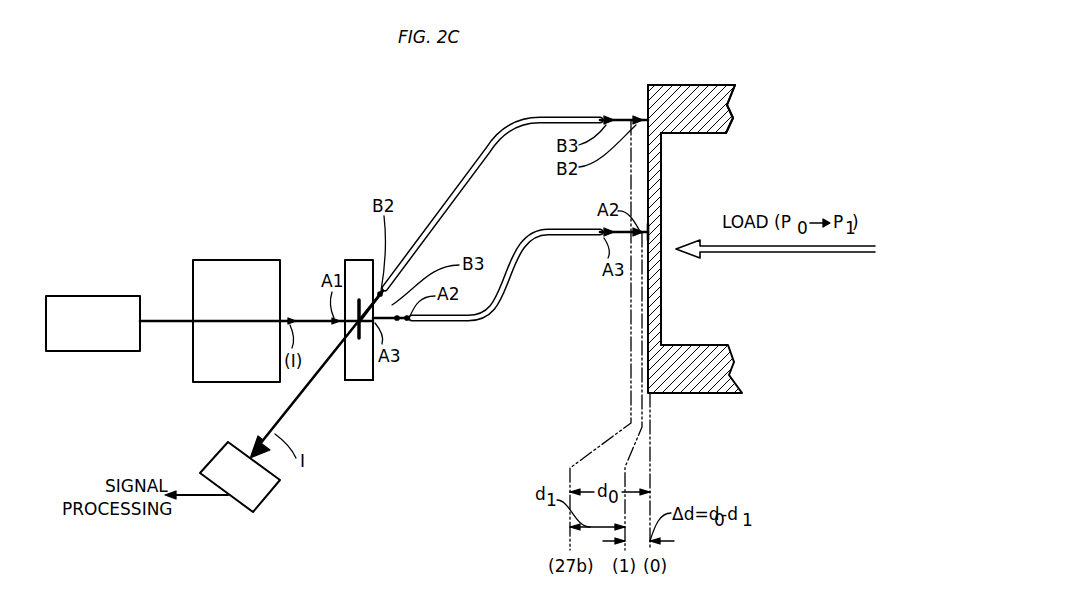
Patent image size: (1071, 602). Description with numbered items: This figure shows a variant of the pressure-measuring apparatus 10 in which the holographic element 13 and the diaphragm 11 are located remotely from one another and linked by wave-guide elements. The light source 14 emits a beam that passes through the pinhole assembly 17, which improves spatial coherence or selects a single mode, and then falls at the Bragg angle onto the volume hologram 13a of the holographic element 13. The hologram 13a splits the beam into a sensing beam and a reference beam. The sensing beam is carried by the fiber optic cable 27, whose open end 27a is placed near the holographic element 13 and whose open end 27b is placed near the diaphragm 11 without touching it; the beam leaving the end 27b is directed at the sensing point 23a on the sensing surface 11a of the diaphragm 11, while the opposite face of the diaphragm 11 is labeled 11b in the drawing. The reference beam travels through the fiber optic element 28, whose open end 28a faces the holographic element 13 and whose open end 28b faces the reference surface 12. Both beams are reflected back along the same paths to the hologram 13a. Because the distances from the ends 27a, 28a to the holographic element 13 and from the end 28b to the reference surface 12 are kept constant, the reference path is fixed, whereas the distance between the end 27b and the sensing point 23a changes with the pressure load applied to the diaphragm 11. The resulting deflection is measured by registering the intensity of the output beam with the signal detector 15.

The apparatus 10 is at (256, 116).
The diaphragm 11 is at (661, 300).
The sensing surface 11a is at (648, 186).
The rear face of wall 11b is at (661, 178).
The reference surface 12 is at (648, 87).
The holographic element 13 is at (357, 262).
The volume hologram 13a is at (361, 372).
The light source 14 is at (95, 299).
The signal detector 15 is at (270, 496).
The pinhole assembly 17 is at (236, 264).
The sensing point 23a is at (655, 238).
The fiber optic cable 27 is at (530, 270).
The open end of fiber optic cable 27 27a is at (410, 323).
The open end of fiber optic cable 27 27b is at (603, 231).
The fiber optic element 28 is at (463, 176).
The open end of fiber optic element 28 28a is at (389, 291).
The open end of fiber optic element 28 28b is at (602, 118).